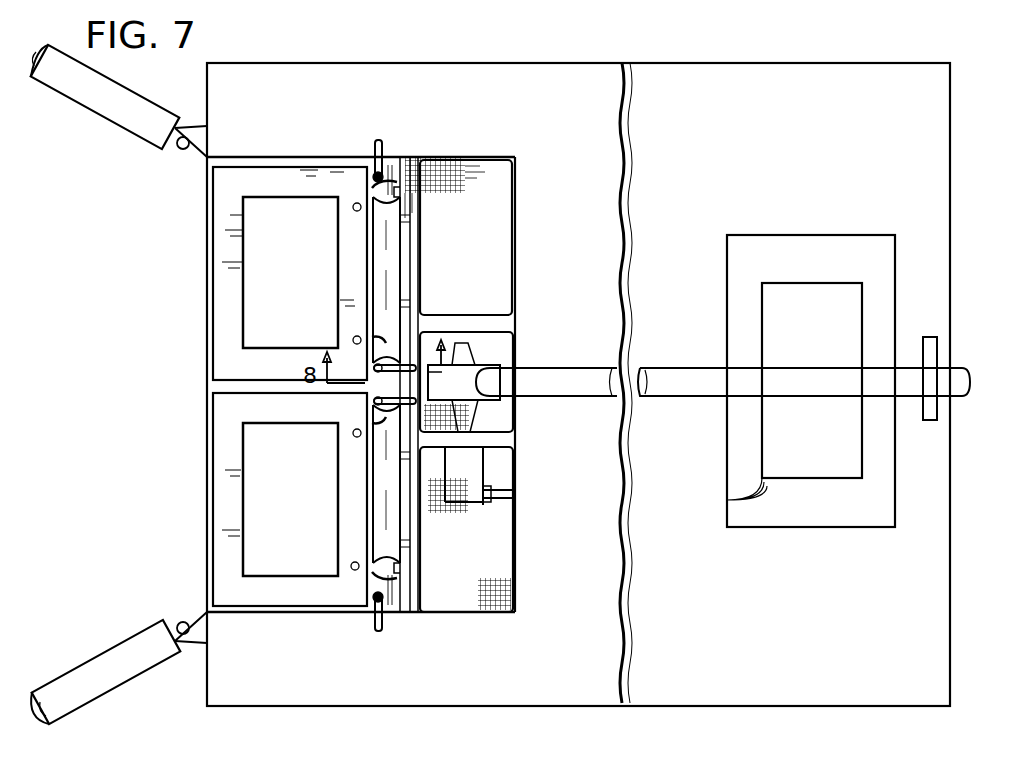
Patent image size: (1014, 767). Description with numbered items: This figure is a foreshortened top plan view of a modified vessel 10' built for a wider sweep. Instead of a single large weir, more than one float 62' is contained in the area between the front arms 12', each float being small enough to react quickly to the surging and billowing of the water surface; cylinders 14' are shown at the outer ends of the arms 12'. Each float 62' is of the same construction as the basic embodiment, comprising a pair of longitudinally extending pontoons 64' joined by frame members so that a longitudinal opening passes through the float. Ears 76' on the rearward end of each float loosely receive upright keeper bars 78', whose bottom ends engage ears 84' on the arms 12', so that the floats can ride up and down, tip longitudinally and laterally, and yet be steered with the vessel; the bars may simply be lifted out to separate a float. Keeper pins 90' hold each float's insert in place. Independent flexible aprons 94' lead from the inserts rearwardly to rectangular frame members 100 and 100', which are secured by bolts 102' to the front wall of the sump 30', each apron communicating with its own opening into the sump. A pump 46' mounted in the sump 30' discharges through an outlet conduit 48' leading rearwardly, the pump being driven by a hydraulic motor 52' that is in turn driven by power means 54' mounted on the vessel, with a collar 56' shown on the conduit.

The vessel 10' is at (626, 367).
The front arms 12' is at (578, 383).
The hydraulic cylinder 14' is at (119, 384).
The sump 30' is at (477, 242).
The pump 46' is at (482, 383).
The outlet conduit 48' is at (723, 370).
The hydraulic motor 52' is at (482, 529).
The power means 54' is at (811, 381).
The shaft collar 56' is at (921, 363).
The float 62' is at (346, 384).
The pontoon 64' is at (290, 381).
The ear 76' is at (341, 332).
The keeper bar 78' is at (361, 383).
The ear 84' is at (428, 382).
The keeper pin 90' is at (333, 386).
The flexible apron 94' is at (380, 380).
The rectangular open center frame member 100 is at (357, 384).
The rectangular frame 100' is at (429, 391).
The bolt 102' is at (344, 380).